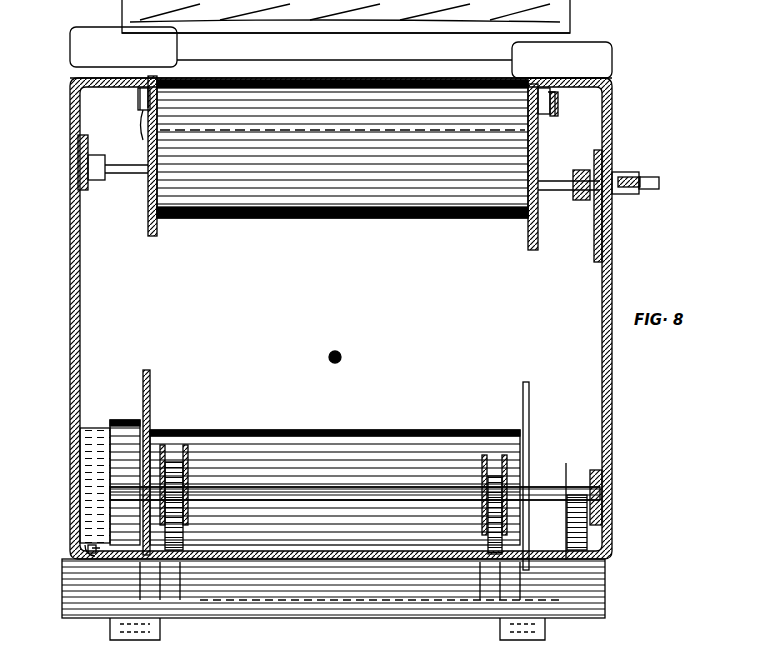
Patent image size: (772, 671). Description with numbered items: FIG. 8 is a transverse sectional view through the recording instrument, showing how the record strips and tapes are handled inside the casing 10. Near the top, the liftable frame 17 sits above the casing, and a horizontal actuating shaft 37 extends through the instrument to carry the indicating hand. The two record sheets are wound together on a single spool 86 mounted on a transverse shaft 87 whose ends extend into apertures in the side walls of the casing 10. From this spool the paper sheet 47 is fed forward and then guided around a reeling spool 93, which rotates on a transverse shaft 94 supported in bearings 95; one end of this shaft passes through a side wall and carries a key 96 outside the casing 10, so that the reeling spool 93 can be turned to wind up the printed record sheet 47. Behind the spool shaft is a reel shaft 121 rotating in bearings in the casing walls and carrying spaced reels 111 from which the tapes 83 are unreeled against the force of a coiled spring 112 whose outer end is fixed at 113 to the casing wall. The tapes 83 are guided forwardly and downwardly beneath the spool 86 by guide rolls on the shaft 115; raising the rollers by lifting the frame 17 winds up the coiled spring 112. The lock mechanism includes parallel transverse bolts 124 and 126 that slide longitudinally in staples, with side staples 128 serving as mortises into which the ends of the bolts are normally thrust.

The casing 10 is at (602, 281).
The frame 17 is at (264, 14).
The actuating shaft 37 is at (343, 357).
The sheet 47 is at (500, 100).
The tapes 83 is at (184, 546).
The spool 86 is at (150, 391).
The transverse shaft 87 is at (541, 492).
The reeling spool 93 is at (528, 230).
The transverse shaft 94 is at (556, 180).
The bearings 95 is at (96, 180).
The key 96 is at (633, 175).
The reels 111 is at (190, 460).
The coiled spring 112 is at (92, 428).
The fixing point 113 is at (95, 557).
The shaft 115 is at (320, 605).
The reel shaft 121 is at (440, 492).
The bolt 124 is at (152, 97).
The bolt 126 is at (536, 104).
The staples 128 is at (146, 100).